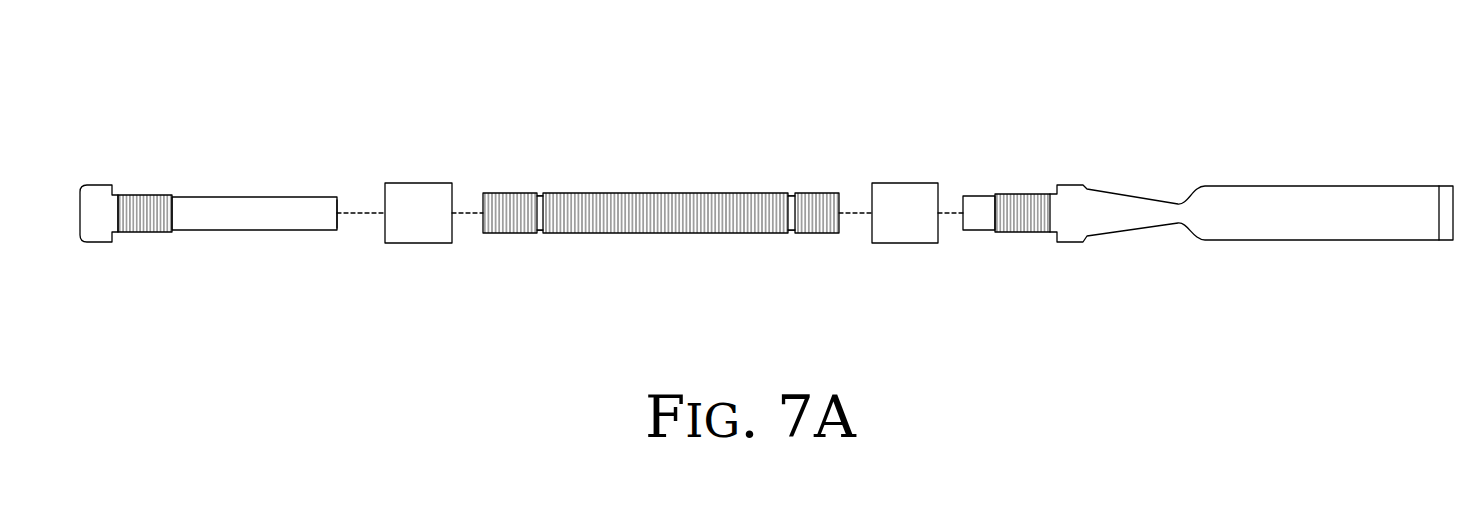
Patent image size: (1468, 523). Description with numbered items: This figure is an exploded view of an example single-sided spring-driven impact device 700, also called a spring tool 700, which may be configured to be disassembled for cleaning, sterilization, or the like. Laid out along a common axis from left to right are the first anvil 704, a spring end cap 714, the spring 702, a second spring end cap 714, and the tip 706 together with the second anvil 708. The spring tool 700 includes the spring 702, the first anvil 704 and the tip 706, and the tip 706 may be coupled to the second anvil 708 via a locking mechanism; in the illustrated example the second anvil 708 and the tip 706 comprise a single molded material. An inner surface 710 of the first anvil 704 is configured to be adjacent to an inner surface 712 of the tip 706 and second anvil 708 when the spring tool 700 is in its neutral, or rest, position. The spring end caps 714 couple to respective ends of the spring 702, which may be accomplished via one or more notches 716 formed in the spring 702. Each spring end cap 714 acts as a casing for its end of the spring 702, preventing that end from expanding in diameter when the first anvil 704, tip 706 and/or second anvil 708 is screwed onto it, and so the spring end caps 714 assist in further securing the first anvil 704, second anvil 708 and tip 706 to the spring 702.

The single-sided spring-driven impact device 700 is at (195, 68).
The spring 702 is at (688, 193).
The first anvil 704 is at (283, 230).
The tip 706 is at (1248, 188).
The second anvil 708 is at (978, 196).
The inner surface 710 is at (337, 230).
The inner surface 712 is at (963, 230).
The spring end caps 714 is at (418, 182).
The notches 716 is at (532, 177).